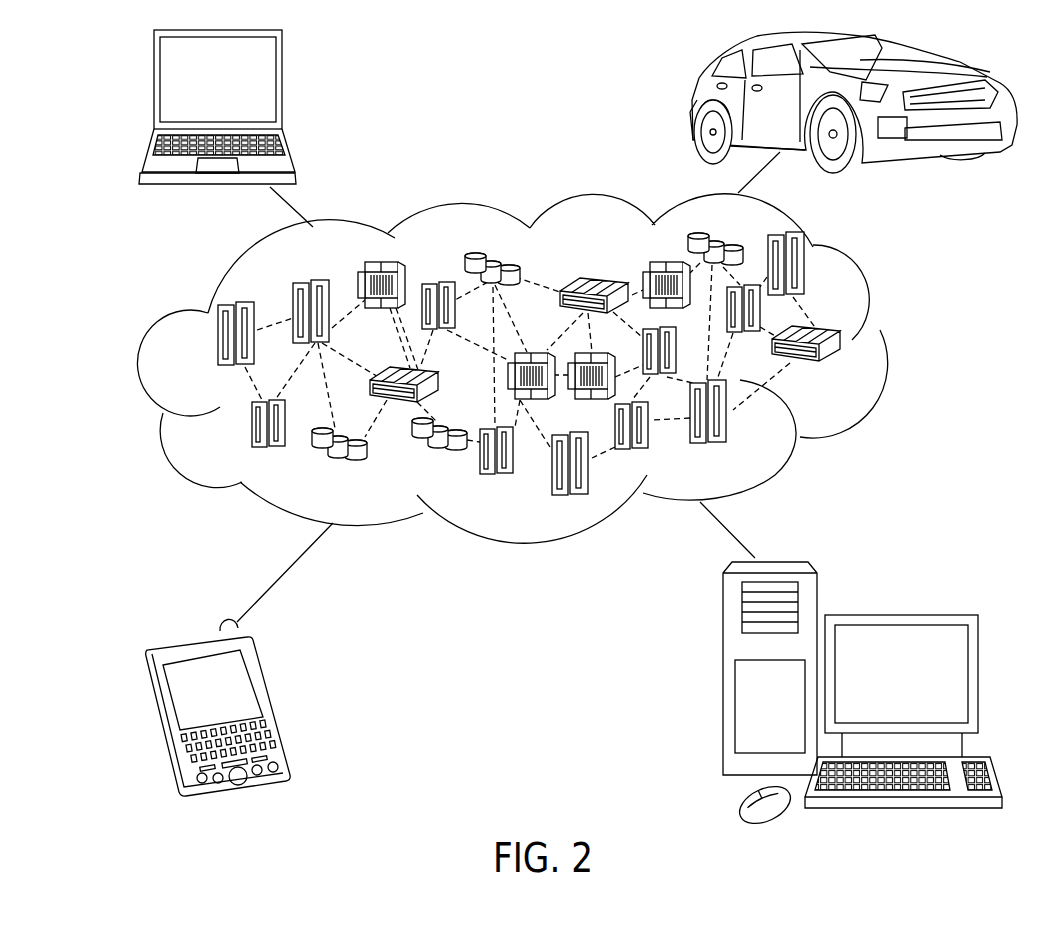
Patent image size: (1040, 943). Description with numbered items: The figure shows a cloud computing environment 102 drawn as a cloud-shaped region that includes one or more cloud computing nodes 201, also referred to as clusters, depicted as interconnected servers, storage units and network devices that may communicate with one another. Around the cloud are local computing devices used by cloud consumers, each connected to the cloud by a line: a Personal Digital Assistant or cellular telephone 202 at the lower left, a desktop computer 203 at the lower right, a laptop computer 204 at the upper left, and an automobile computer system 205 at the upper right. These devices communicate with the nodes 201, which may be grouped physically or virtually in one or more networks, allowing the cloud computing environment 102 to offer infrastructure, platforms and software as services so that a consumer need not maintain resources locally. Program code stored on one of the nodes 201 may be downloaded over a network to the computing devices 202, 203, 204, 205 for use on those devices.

The cloud computing environment 102 is at (902, 346).
The cloud computing nodes 201 is at (846, 372).
The Personal Digital Assistant (PDA) or cellular telephone 202 is at (273, 703).
The desktop computer 203 is at (900, 613).
The laptop computer 204 is at (283, 88).
The automobile computer system 205 is at (690, 100).